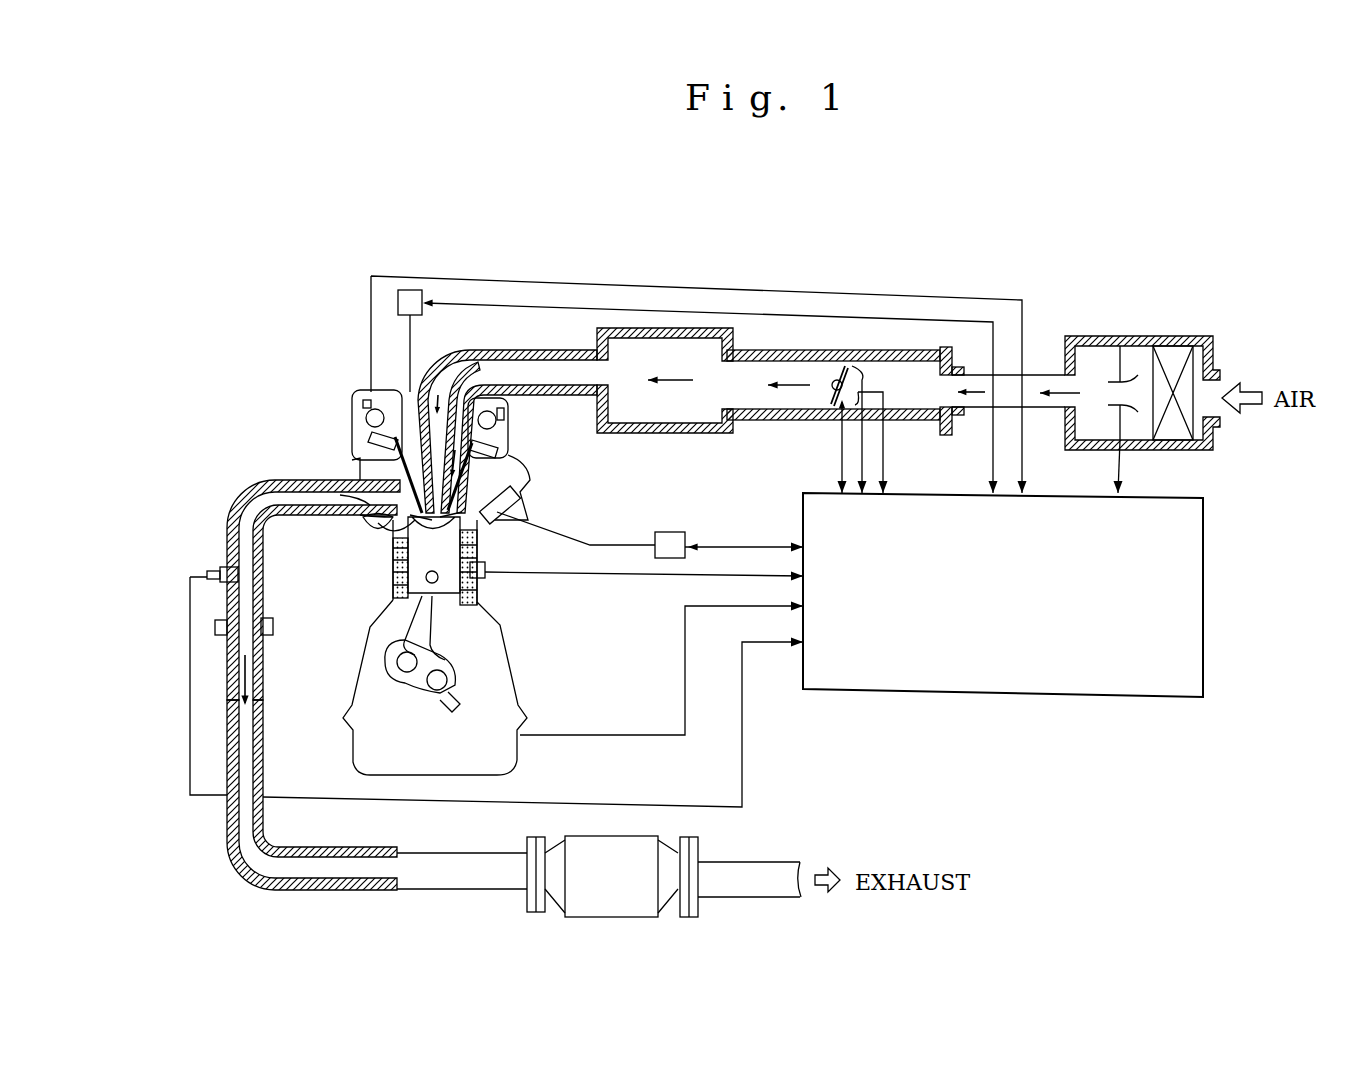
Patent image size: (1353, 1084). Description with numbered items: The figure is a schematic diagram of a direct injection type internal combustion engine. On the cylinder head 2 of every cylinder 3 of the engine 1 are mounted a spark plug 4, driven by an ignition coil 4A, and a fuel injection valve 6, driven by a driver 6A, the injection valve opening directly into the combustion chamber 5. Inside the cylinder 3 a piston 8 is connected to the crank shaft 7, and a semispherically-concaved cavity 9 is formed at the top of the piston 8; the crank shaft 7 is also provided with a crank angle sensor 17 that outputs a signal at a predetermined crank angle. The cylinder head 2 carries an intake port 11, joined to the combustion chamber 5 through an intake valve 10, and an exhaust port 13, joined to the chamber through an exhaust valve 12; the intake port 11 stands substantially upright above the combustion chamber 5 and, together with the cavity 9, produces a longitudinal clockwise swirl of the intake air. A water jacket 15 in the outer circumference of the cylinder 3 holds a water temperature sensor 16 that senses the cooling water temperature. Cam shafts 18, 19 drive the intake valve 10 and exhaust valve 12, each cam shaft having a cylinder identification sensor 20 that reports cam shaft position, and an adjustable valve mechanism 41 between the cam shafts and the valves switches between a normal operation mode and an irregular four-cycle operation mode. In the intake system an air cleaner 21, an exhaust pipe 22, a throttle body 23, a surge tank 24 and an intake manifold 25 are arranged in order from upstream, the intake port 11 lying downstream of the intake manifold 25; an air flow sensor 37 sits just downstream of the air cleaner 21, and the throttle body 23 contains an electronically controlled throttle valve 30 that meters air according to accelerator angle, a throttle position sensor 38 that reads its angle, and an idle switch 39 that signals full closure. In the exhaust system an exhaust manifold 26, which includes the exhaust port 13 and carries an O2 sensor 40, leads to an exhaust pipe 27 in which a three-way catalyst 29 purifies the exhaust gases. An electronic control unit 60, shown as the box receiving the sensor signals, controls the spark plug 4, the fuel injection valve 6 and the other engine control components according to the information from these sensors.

The engine 1 is at (535, 705).
The cylinder head 2 is at (360, 392).
The cylinder 3 is at (393, 542).
The spark plug 4 is at (360, 460).
The ignition coil 4A is at (408, 290).
The combustion chamber 5 is at (393, 565).
The fuel injection valve 6 is at (503, 516).
The driver 6A is at (668, 533).
The crank shaft 7 is at (400, 672).
The piston 8 is at (420, 580).
The cavity 9 is at (470, 602).
The intake valve 10 is at (493, 473).
The intake port 11 is at (457, 367).
The exhaust valve 12 is at (364, 424).
The exhaust port 13 is at (347, 483).
The water jacket 15 is at (490, 572).
The water temperature sensor 16 is at (478, 590).
The crank pin 17 is at (443, 700).
The cam shaft 18 is at (507, 437).
The cam shaft 19 is at (358, 405).
The cylinder identification sensor 20 is at (368, 405).
The air cleaner 21 is at (1172, 350).
The exhaust pipe 22 is at (1040, 373).
The throttle body 23 is at (772, 420).
The surge tank 24 is at (650, 433).
The intake manifold 25 is at (533, 352).
The exhaust manifold 26 is at (228, 515).
The exhaust pipe 27 is at (306, 887).
The three-way catalyst 29 is at (618, 917).
The electronically controlled throttle valve 30 is at (835, 378).
The air flow sensor 37 is at (1120, 378).
The throttle position sensor 38 is at (860, 375).
The idle switch 39 is at (868, 410).
The O2 sensor 40 is at (210, 572).
The adjustable valve mechanism 41 is at (496, 410).
The electronic control unit 60 is at (1208, 505).